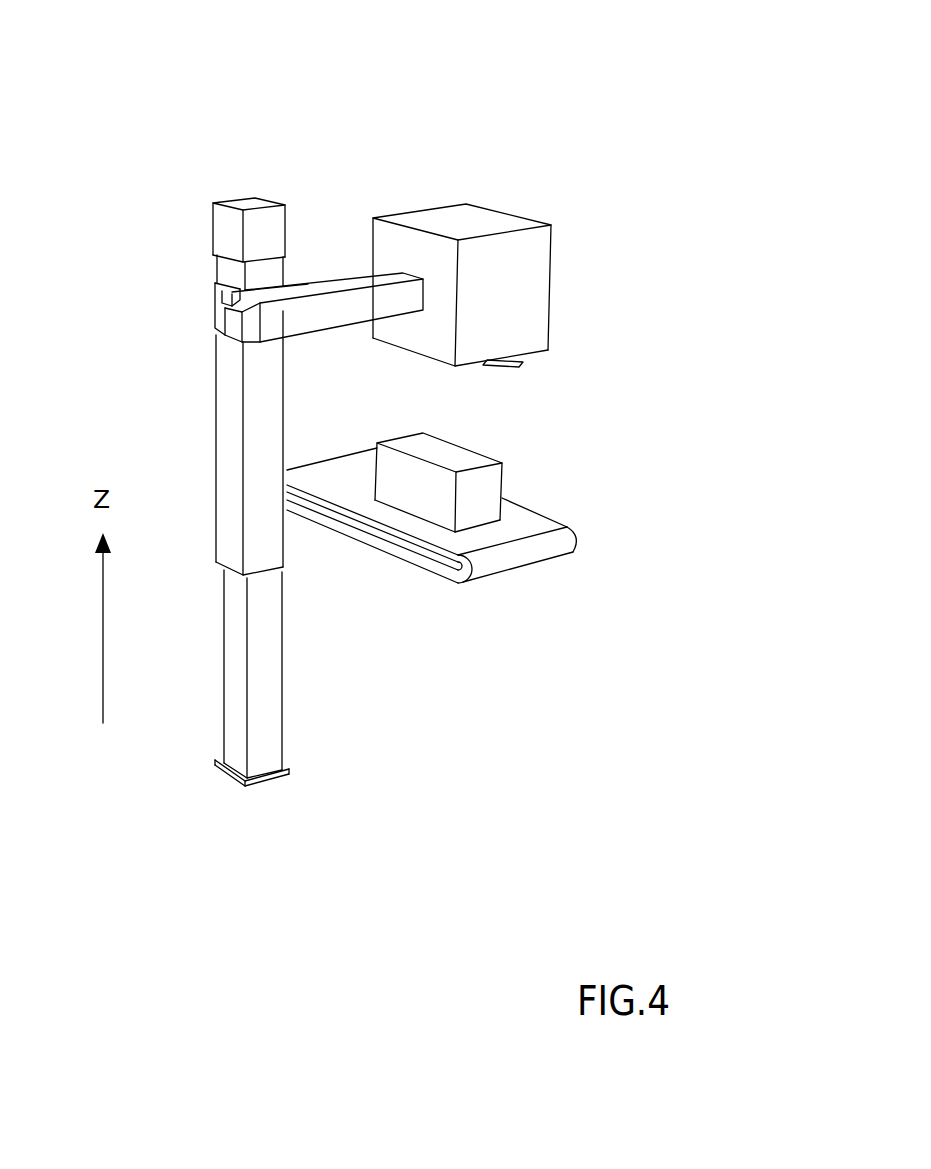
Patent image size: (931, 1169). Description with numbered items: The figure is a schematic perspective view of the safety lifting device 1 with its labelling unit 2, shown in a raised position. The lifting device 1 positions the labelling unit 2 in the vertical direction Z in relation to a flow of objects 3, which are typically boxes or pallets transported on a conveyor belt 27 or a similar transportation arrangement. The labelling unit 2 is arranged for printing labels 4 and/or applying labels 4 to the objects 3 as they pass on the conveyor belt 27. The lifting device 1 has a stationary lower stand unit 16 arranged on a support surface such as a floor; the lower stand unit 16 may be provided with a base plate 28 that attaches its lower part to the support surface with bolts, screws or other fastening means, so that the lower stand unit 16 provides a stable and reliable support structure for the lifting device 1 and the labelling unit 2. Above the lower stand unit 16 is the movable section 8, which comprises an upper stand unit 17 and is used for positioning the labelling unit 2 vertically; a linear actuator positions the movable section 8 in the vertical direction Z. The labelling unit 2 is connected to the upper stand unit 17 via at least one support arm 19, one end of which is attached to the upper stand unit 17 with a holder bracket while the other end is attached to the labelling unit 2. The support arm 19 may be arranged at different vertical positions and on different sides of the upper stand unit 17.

The safety lifting device 1 is at (188, 125).
The movable section 8 is at (152, 268).
The upper stand unit 17 is at (228, 408).
The lower stand unit 16 is at (267, 663).
The base plate 28 is at (227, 767).
The support arm 19 is at (318, 290).
The labelling unit 2 is at (537, 249).
The labels 4 is at (517, 360).
The objects 3 is at (487, 490).
The conveyor belt 27 is at (535, 548).